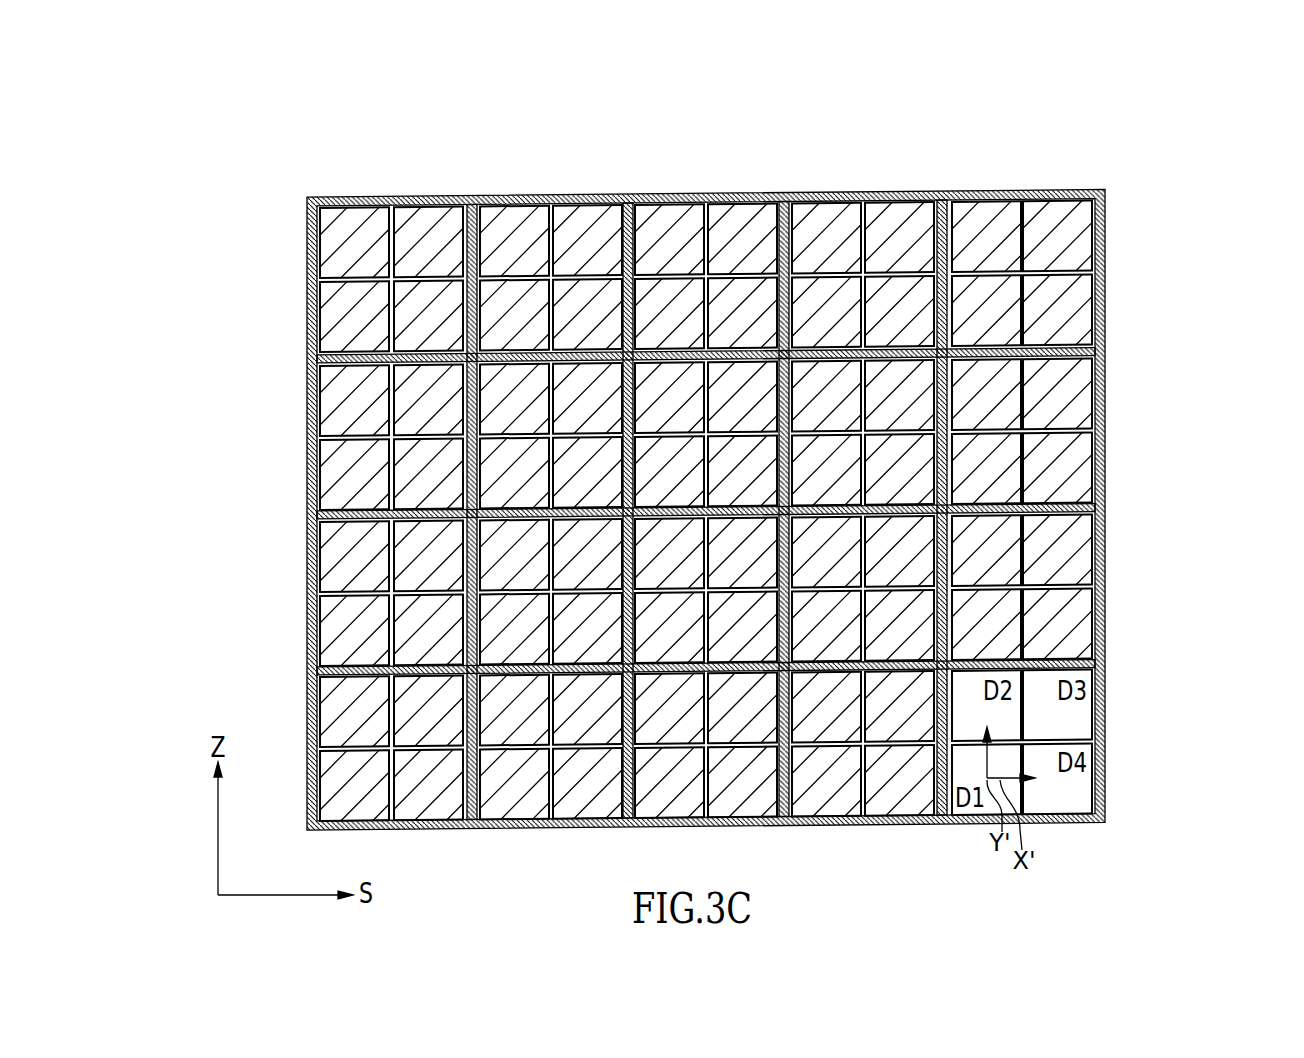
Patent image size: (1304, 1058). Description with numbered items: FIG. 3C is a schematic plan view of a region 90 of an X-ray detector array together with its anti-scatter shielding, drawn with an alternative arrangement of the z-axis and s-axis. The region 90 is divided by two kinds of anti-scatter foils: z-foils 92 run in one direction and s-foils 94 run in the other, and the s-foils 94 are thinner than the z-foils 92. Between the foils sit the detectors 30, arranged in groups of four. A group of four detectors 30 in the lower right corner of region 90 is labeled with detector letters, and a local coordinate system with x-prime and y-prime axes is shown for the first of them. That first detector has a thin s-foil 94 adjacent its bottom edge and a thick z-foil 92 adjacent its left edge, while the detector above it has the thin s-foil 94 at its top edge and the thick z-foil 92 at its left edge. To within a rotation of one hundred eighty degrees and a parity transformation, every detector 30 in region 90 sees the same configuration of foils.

The region 90 is at (1150, 87).
The z-foils 92 is at (628, 196).
The s-foils 94 is at (312, 670).
The detectors 30 is at (420, 463).